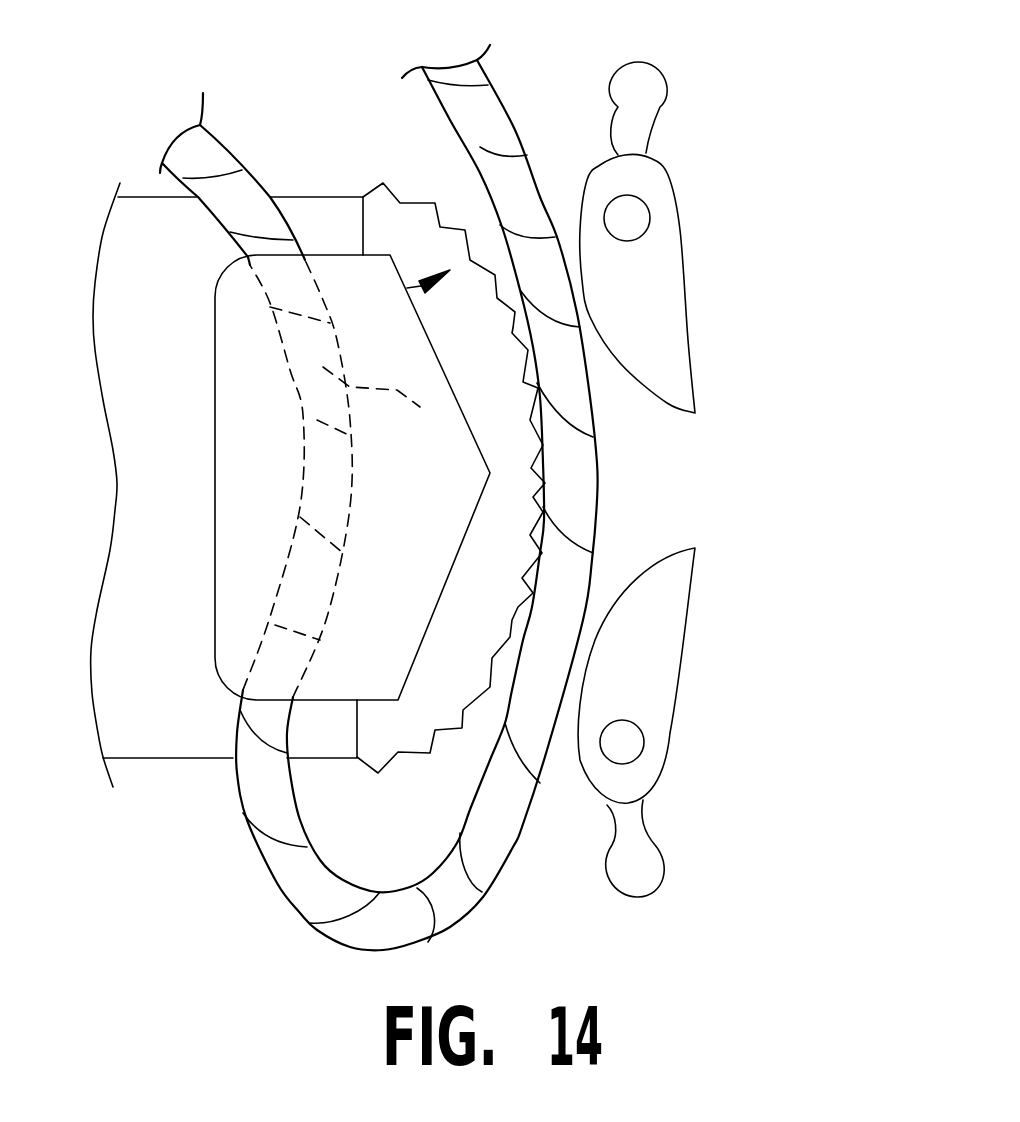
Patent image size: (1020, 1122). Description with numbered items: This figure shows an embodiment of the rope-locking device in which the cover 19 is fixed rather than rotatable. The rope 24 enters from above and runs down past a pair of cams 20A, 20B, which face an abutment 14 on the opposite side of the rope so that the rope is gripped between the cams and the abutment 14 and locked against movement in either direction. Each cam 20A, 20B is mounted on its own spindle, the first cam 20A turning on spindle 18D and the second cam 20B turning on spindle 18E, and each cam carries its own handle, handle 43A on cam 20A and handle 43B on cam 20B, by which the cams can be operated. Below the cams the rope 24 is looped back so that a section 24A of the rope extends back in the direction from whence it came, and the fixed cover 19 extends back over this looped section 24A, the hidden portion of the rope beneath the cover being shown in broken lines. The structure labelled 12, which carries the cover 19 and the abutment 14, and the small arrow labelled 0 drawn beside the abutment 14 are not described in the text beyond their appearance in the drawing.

The body 12 is at (188, 743).
The abutment 14 is at (395, 780).
The cover 19 is at (425, 520).
The rope 24 is at (493, 110).
The section of the rope 24A is at (384, 406).
The arrow direction 0 is at (439, 287).
The cam 20A is at (663, 352).
The cam 20B is at (660, 610).
The spindle 18D is at (627, 220).
The spindle 18E is at (622, 742).
The handle 43A is at (642, 108).
The handle 43B is at (637, 853).